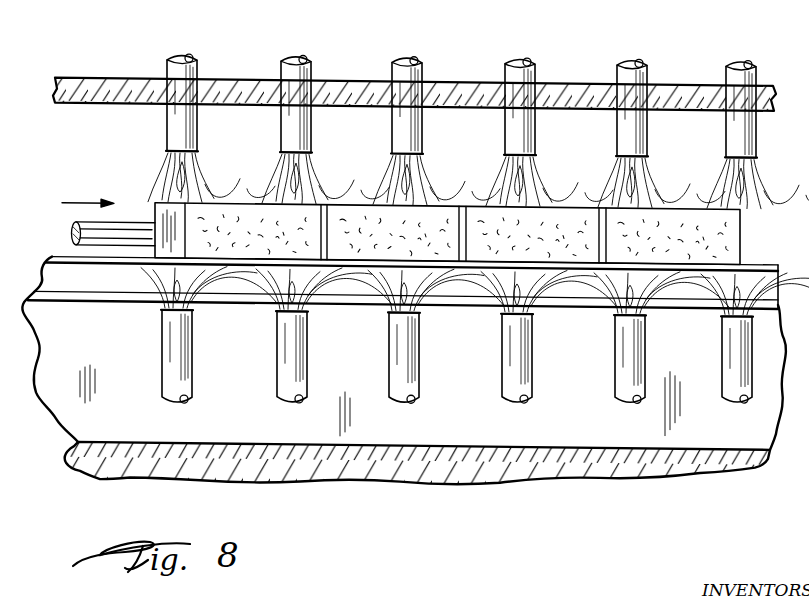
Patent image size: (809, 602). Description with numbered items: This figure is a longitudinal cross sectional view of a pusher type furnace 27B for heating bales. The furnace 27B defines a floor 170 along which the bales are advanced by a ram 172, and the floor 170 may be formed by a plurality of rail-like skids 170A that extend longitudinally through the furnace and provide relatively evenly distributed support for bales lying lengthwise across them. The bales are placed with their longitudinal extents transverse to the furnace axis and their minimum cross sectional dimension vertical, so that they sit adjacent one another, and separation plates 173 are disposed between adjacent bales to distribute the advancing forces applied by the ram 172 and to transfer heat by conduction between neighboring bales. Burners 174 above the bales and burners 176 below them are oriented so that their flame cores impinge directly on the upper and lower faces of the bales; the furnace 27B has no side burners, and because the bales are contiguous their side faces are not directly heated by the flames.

The pusher type furnace 27B is at (637, 40).
The burners 174 is at (281, 68).
The separation plates 173 is at (322, 199).
The ram 172 is at (90, 225).
The rail-like skids 170A is at (143, 259).
The floor 170 is at (574, 284).
The burners 176 is at (277, 379).